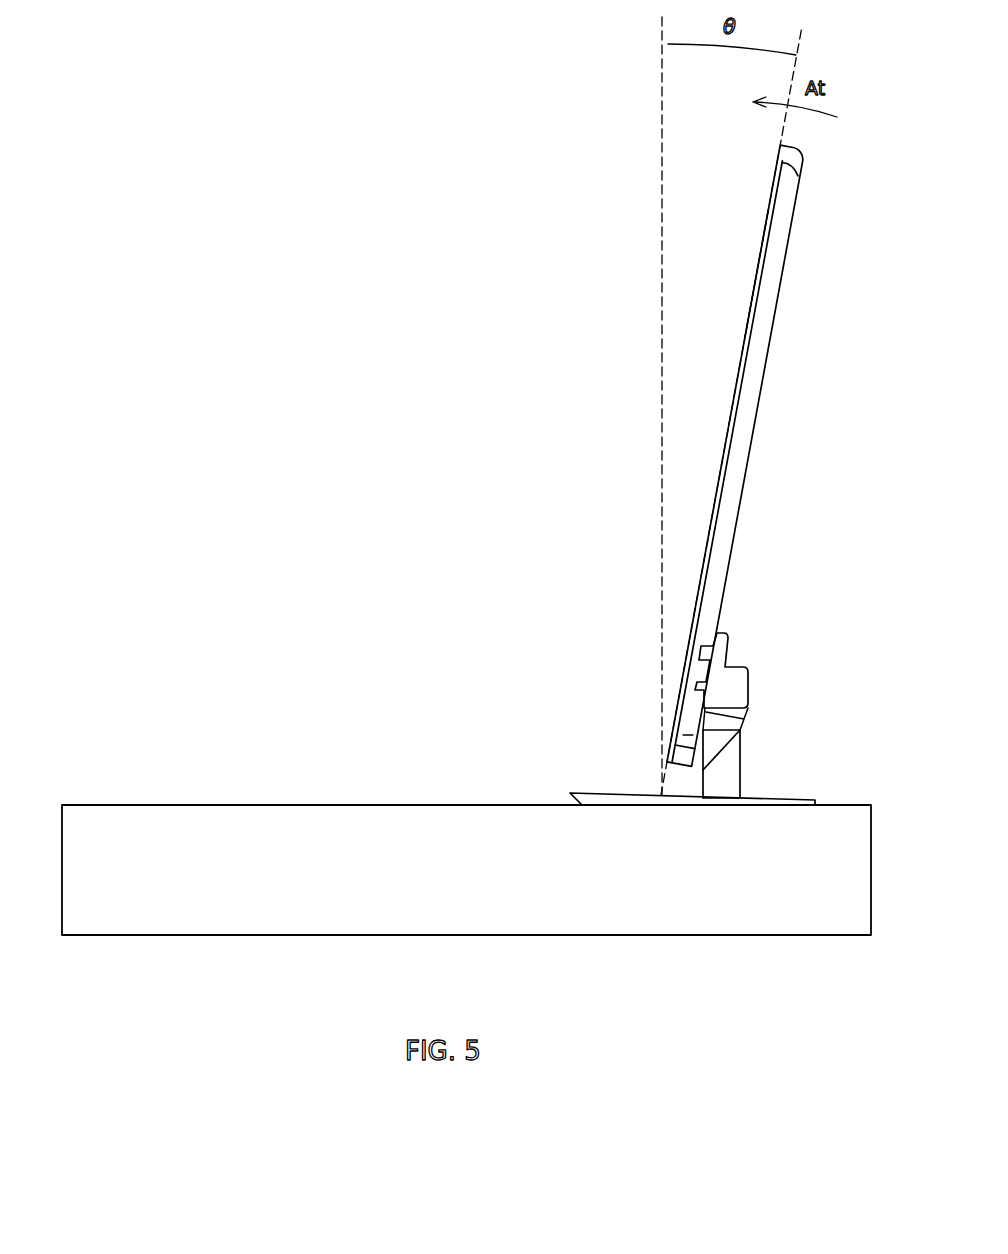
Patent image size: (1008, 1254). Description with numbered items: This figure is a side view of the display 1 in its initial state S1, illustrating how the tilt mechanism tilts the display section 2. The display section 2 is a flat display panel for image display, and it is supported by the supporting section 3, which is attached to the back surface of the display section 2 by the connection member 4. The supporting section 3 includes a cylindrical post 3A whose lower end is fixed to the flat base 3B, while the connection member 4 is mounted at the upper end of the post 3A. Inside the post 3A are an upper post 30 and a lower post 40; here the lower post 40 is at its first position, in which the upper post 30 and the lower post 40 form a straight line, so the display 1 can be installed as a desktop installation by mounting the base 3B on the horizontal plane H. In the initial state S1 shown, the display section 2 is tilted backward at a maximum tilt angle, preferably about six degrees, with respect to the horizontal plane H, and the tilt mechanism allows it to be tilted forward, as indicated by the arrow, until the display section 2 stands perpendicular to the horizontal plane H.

The display 1 is at (724, 582).
The display section 2 is at (765, 455).
The supporting section 3 is at (724, 826).
The post 3A is at (764, 767).
The base 3B is at (782, 800).
The connection member 4 is at (750, 690).
The upper post 30 is at (712, 735).
The lower post 40 is at (720, 790).
The initial state S1 is at (799, 273).
The horizontal plane H is at (427, 795).